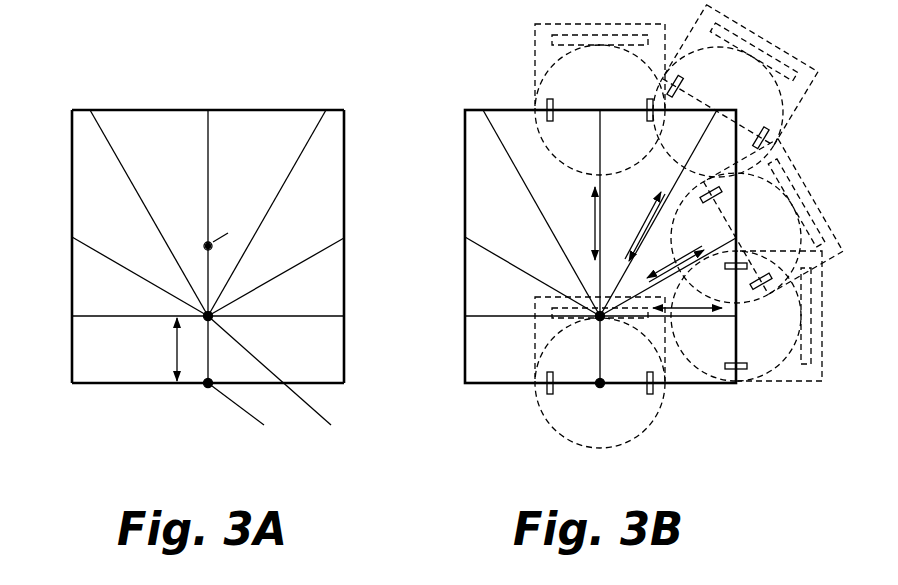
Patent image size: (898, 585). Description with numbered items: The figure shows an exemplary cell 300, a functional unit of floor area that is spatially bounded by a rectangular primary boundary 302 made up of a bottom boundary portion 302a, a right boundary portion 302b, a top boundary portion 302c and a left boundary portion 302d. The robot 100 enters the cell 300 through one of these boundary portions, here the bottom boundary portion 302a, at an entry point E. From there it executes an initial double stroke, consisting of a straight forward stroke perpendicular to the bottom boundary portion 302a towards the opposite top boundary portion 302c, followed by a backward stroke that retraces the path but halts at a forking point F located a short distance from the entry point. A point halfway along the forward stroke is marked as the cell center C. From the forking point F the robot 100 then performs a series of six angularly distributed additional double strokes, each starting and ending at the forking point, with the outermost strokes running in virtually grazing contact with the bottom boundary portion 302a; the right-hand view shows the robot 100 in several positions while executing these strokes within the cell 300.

In FIG. 3B, the robot 100 is at (542, 55).
In FIG. 3A, the cell 300 is at (200, 95).
In FIG. 3B, the cell 300 is at (453, 100).
In FIG. 3A, the primary boundary 302 is at (344, 347).
In FIG. 3A, the bottom boundary portion 302a is at (106, 384).
In FIG. 3A, the right boundary portion 302b is at (344, 197).
In FIG. 3A, the top boundary portion 302c is at (270, 112).
In FIG. 3A, the left boundary portion 302d is at (72, 138).